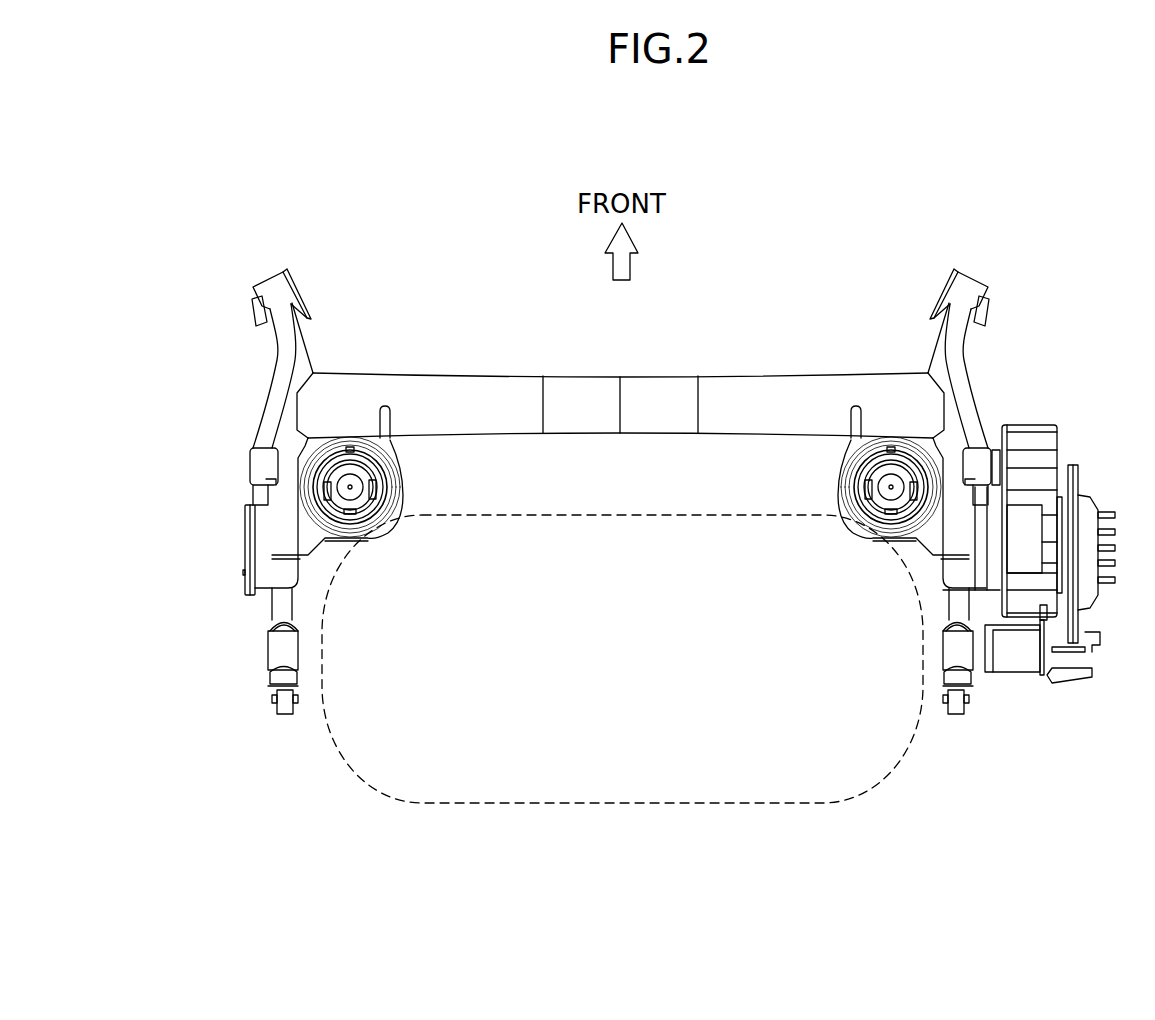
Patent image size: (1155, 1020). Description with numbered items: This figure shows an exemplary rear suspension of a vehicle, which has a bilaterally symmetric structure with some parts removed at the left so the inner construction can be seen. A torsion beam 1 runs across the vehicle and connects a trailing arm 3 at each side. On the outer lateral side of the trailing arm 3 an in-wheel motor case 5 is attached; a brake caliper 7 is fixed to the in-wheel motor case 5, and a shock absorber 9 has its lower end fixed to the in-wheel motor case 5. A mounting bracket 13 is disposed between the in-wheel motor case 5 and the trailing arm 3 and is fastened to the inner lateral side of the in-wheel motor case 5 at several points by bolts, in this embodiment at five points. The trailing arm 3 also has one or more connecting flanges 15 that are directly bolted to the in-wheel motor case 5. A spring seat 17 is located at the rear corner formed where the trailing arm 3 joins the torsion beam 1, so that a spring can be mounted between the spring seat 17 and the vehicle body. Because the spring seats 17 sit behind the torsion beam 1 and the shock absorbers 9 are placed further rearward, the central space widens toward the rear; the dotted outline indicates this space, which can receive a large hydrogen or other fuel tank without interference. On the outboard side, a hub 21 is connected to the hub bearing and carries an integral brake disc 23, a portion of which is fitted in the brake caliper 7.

The torsion beam 1 is at (663, 385).
The trailing arm 3 is at (280, 345).
The in-wheel motor case 5 is at (1050, 424).
The brake caliper 7 is at (1065, 673).
The shock absorber 9 is at (268, 655).
The mounting bracket 13 is at (245, 574).
The connecting flange 15 is at (250, 461).
The spring seat 17 is at (402, 473).
The hub 21 is at (1092, 500).
The brake disc 23 is at (1075, 463).